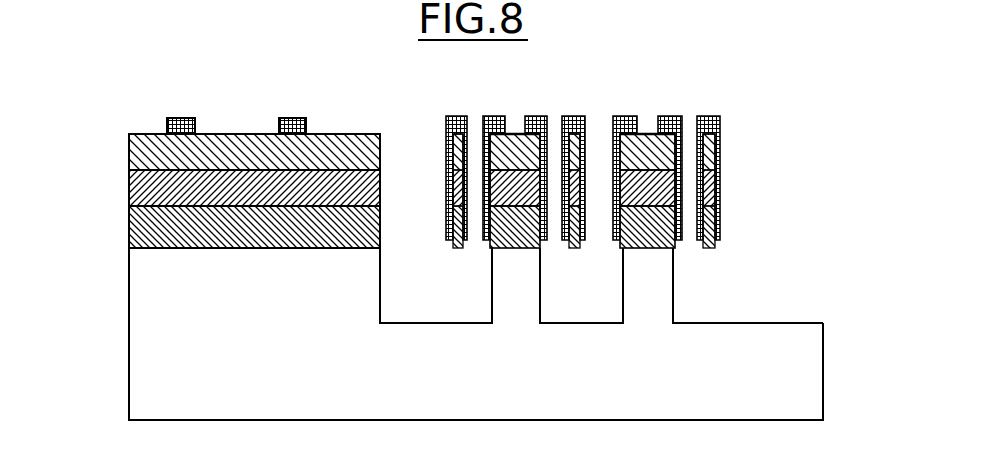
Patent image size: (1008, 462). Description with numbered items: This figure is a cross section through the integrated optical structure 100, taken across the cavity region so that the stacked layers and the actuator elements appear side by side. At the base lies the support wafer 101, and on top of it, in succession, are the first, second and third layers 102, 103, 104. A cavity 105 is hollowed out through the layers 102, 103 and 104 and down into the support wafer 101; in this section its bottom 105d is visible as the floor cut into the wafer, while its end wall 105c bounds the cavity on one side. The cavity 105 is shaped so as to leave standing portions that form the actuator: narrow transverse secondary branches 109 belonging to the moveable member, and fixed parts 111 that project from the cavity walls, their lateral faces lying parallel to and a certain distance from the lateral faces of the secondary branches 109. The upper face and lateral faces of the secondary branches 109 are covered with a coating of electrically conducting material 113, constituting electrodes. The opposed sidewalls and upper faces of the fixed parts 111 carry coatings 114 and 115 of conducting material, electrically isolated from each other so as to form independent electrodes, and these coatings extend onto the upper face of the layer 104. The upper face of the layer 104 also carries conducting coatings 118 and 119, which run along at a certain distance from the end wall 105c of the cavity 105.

The integrated optical structure 100 is at (746, 167).
The support wafer 101 is at (150, 357).
The first layer 102 is at (153, 228).
The second layer 103 is at (152, 184).
The third layer 104 is at (152, 148).
The cavity 105 is at (712, 283).
The end wall 105c is at (382, 280).
The bottom 105d is at (788, 323).
The secondary branches 109 is at (450, 150).
The fixed part 111 is at (517, 133).
The electrically conducting material coating 113 is at (456, 128).
The coating 114 is at (498, 115).
The coating 115 is at (538, 115).
The coating 118 is at (182, 117).
The coating 119 is at (293, 117).